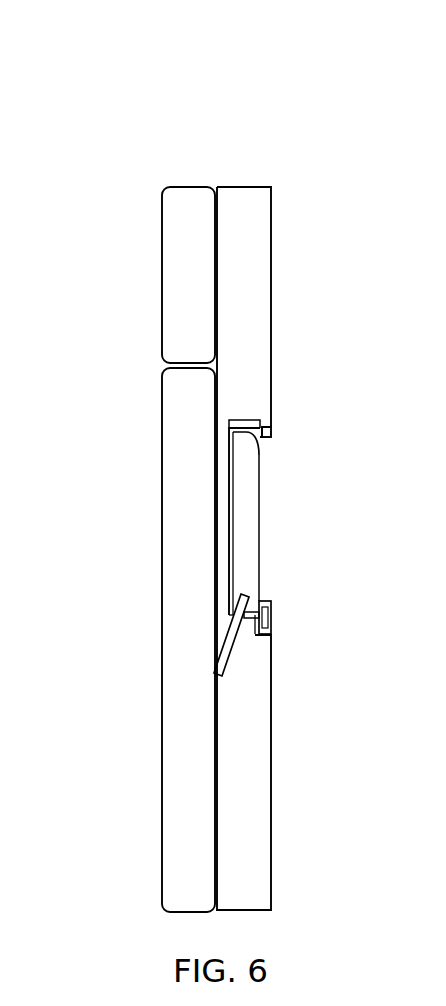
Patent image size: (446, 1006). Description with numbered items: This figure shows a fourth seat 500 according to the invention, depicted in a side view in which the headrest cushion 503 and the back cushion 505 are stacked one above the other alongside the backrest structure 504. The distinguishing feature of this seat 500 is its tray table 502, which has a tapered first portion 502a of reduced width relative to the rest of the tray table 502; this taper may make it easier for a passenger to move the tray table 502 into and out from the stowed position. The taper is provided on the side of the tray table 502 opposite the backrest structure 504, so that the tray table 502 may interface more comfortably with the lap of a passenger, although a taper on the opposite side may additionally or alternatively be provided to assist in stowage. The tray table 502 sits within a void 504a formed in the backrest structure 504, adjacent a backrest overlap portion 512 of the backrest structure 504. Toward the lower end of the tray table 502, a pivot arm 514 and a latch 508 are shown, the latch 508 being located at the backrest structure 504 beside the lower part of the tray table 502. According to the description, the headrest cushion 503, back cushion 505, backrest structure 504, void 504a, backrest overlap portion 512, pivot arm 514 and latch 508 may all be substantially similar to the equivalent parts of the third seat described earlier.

The seat 500 is at (168, 165).
The tray table 502 is at (261, 518).
The tapered first portion 502a is at (256, 453).
The headrest cushion 503 is at (182, 221).
The backrest structure 504 is at (262, 211).
The void 504a is at (249, 417).
The back cushion 505 is at (180, 393).
The latch 508 is at (272, 612).
The backrest overlap portion 512 is at (270, 431).
The pivot arm 514 is at (227, 636).